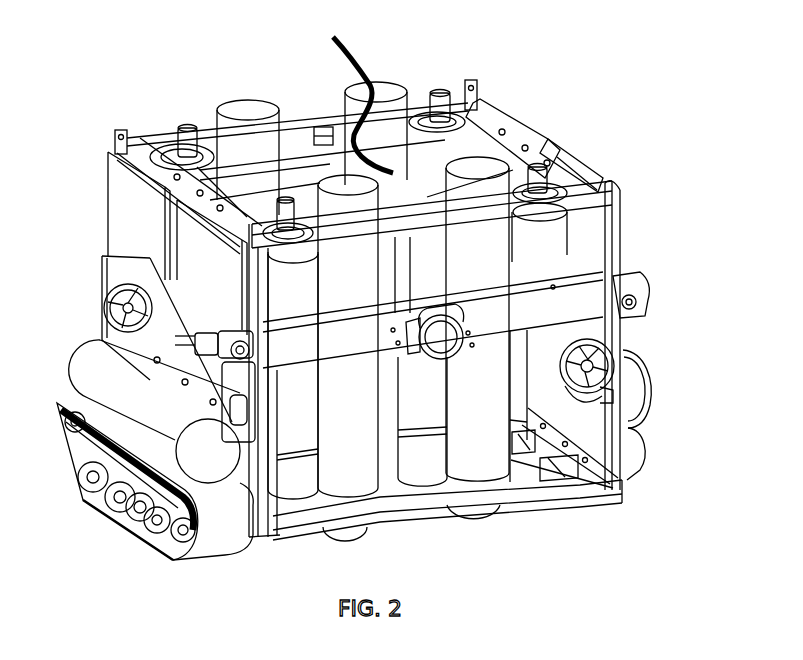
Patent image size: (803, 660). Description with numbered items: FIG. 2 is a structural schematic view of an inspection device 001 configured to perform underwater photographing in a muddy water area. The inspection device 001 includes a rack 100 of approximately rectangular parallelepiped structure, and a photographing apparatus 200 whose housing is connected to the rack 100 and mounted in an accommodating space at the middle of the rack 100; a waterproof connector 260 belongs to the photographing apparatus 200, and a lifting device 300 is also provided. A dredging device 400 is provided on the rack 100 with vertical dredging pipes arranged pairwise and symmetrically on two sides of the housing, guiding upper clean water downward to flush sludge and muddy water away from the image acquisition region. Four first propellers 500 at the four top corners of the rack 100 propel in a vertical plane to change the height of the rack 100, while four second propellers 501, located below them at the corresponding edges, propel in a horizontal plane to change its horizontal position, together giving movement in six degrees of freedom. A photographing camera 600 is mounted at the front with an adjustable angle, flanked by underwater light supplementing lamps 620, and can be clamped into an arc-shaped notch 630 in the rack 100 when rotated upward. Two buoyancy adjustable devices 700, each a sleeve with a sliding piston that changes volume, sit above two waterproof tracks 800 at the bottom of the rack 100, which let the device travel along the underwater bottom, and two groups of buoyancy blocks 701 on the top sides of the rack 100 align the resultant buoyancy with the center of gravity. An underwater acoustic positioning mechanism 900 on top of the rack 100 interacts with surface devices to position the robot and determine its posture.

The inspection device 001 is at (430, 48).
The rack 100 is at (150, 158).
The photographing apparatus 200 is at (268, 190).
The waterproof connector 260 is at (457, 133).
The lifting device 300 is at (628, 314).
The dredging device 400 is at (390, 117).
The first propeller 500 is at (552, 182).
The second propeller 501 is at (593, 370).
The photographing camera 600 is at (440, 337).
The underwater light supplementing lamp 620 is at (235, 352).
The arc-shaped notch 630 is at (415, 330).
The buoyancy adjustable device 700 is at (120, 370).
The buoyancy block 701 is at (127, 232).
The waterproof track 800 is at (115, 518).
The underwater acoustic positioning mechanism 900 is at (323, 125).